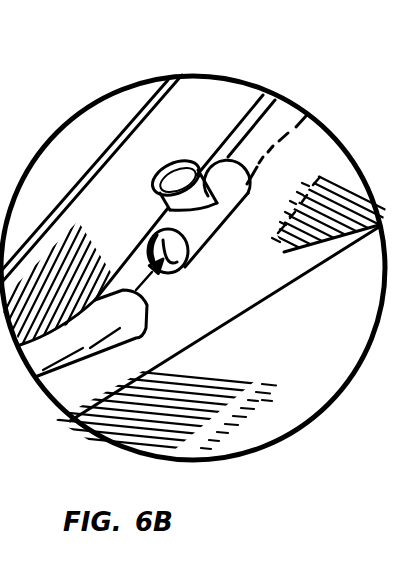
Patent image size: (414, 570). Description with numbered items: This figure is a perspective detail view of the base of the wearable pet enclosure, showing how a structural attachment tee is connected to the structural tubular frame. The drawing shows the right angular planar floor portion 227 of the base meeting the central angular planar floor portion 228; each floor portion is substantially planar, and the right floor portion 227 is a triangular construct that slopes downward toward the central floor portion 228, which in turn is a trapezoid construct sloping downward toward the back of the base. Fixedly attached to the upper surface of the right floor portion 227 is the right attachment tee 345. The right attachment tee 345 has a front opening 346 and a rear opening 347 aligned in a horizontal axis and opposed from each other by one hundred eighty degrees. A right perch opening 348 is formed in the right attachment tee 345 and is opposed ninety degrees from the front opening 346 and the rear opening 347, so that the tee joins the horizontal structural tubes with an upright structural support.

The angular planar floor portion 227 is at (257, 288).
The central angular planar floor portion 228 is at (287, 388).
The right attachment tee 345 is at (200, 203).
The front opening 346 is at (173, 273).
The rear opening 347 is at (245, 173).
The right perch opening 348 is at (180, 181).